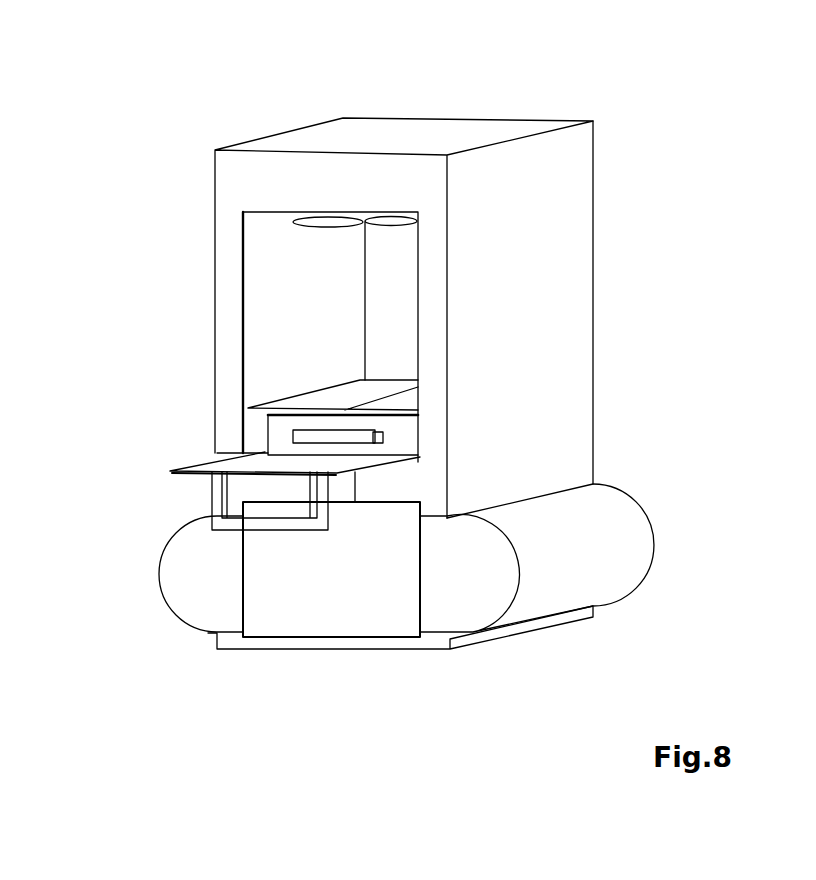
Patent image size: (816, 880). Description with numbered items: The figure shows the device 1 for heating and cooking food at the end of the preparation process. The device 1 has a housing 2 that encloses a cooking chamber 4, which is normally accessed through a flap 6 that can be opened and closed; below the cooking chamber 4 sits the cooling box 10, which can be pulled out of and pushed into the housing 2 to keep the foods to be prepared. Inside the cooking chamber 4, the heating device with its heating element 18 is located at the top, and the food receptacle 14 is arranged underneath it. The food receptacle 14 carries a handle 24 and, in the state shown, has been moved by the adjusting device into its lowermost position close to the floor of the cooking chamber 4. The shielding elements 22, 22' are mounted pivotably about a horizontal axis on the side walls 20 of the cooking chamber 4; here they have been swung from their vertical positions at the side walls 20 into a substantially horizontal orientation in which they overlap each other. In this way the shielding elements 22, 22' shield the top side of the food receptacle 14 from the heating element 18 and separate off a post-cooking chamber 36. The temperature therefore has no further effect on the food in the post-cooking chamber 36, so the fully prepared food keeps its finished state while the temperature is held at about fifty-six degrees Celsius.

The device 1 is at (146, 216).
The housing 2 is at (555, 270).
The cooking chamber 4 is at (256, 299).
The flap 6 is at (198, 467).
The cooling box 10 is at (358, 608).
The food receptacle 14 is at (398, 435).
The heating element 18 is at (325, 223).
The side wall 20 is at (262, 356).
The shielding element 22 is at (468, 353).
The shielding element 22' is at (481, 377).
The handle 24 is at (353, 437).
The post-cooking chamber 36 is at (250, 428).